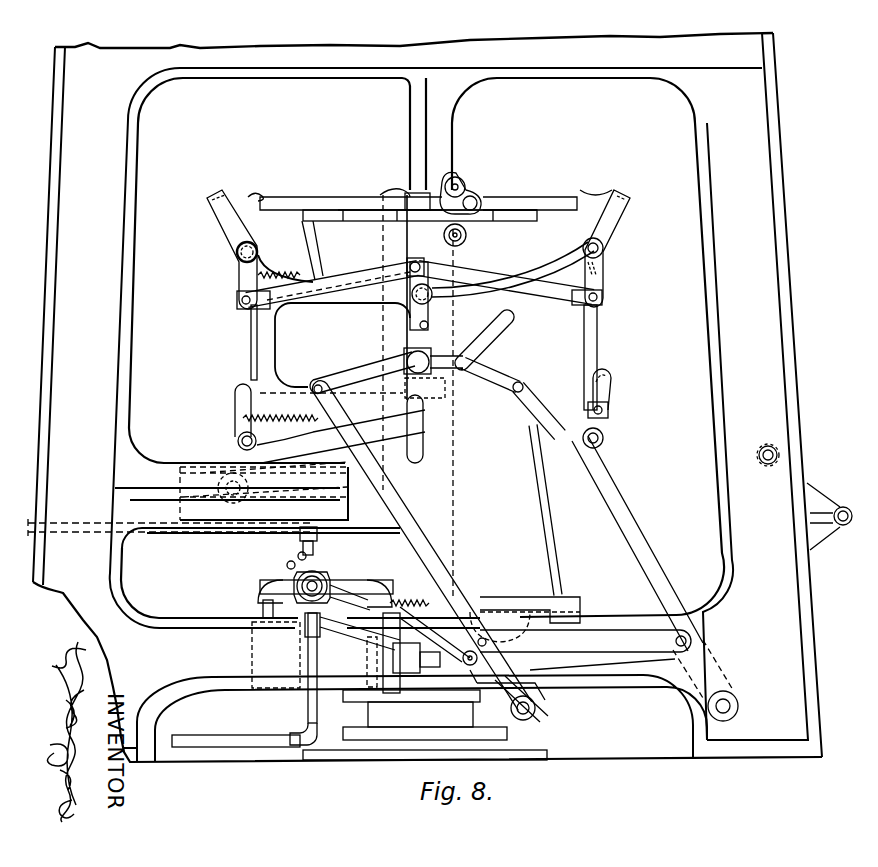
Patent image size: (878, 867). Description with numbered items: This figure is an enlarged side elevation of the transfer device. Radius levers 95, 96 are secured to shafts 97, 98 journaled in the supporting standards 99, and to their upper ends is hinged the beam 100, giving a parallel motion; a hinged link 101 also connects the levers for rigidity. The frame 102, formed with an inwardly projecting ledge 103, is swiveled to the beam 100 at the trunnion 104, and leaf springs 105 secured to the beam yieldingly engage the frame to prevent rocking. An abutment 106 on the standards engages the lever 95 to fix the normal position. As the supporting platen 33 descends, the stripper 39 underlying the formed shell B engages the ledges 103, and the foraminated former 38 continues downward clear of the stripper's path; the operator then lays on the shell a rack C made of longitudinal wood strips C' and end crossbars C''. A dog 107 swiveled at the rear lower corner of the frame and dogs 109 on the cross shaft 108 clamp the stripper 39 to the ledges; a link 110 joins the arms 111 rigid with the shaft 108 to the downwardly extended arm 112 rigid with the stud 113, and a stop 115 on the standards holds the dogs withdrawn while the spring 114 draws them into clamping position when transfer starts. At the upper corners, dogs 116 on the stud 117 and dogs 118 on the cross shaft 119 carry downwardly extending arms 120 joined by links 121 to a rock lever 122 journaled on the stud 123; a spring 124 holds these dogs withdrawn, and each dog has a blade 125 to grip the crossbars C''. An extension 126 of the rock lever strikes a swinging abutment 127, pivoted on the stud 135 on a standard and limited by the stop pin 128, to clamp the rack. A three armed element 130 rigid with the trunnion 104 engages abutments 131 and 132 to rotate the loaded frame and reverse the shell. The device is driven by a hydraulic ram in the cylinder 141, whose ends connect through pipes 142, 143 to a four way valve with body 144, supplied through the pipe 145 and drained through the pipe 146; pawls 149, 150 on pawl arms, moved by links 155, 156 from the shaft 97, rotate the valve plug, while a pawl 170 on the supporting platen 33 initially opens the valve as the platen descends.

The supporting standards 99 is at (877, 396).
The shaft 98 is at (723, 706).
The shaft 97 is at (526, 710).
The radius lever 96 is at (610, 515).
The radius lever 95 is at (430, 553).
The foraminated former 38 is at (537, 528).
The supporting platen 33 is at (560, 600).
The stripper 39 is at (609, 370).
The beam 100 is at (349, 378).
The hinged link 101 is at (627, 640).
The frame 102 is at (597, 282).
The ledge 103 is at (515, 368).
The trunnion 104 is at (412, 355).
The leaf springs 105 is at (313, 432).
The abutment 106 is at (425, 488).
The dog 107 is at (235, 390).
The cross shaft 108 is at (604, 437).
The dogs 109 is at (606, 390).
The link 110 is at (448, 440).
The arms 111 is at (600, 412).
The arm 112 is at (243, 457).
The stud 113 is at (237, 437).
The spring 114 is at (277, 420).
The stop 115 is at (200, 463).
The dogs 116 is at (230, 222).
The stud 117 is at (240, 258).
The dogs 118 is at (620, 222).
The cross shaft 119 is at (604, 248).
The arms 120 is at (607, 294).
The links 121 is at (553, 298).
The rock lever 122 is at (400, 260).
The stud 123 is at (425, 284).
The spring 124 is at (289, 266).
The blade 125 is at (262, 196).
The extension 126 is at (410, 192).
The swinging abutment 127 is at (467, 237).
The stop pin 128 is at (471, 198).
The three armed element 130 is at (410, 370).
The abutment 131 is at (779, 455).
The abutment 132 is at (852, 515).
The stud 135 is at (455, 178).
The cylinder 141 is at (333, 688).
The pipe 142 is at (262, 608).
The pipe 143 is at (379, 591).
The valve body 144 is at (357, 563).
The pipe 145 is at (305, 538).
The pipe 146 is at (317, 673).
The pawl 149 is at (308, 558).
The pawl 150 is at (289, 580).
The link 155 is at (445, 638).
The link 156 is at (432, 603).
The pawl 170 is at (382, 582).
The rack C is at (418, 189).
The longitudinal wood strips C' is at (534, 195).
The crossbars C'' is at (449, 191).
The formed shell B is at (532, 264).